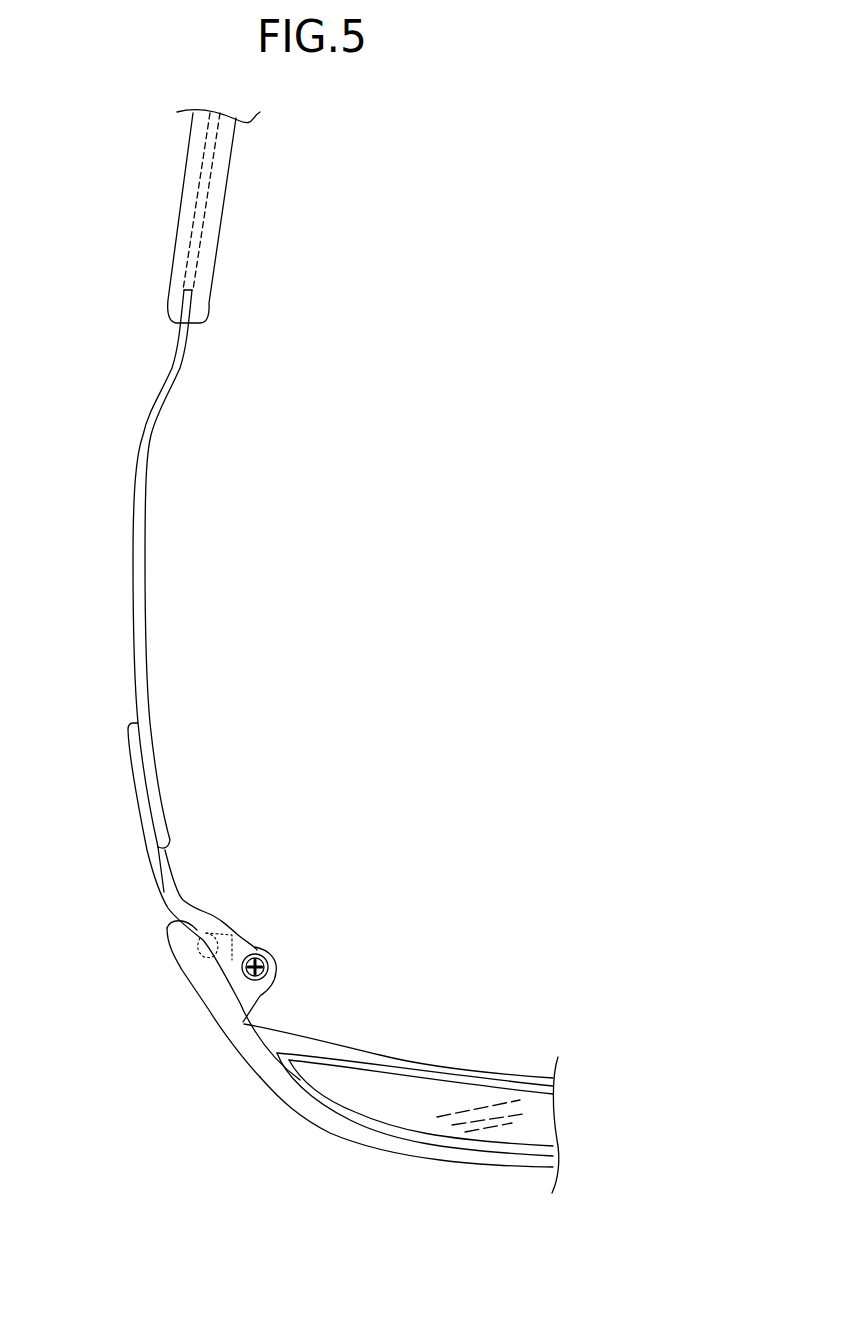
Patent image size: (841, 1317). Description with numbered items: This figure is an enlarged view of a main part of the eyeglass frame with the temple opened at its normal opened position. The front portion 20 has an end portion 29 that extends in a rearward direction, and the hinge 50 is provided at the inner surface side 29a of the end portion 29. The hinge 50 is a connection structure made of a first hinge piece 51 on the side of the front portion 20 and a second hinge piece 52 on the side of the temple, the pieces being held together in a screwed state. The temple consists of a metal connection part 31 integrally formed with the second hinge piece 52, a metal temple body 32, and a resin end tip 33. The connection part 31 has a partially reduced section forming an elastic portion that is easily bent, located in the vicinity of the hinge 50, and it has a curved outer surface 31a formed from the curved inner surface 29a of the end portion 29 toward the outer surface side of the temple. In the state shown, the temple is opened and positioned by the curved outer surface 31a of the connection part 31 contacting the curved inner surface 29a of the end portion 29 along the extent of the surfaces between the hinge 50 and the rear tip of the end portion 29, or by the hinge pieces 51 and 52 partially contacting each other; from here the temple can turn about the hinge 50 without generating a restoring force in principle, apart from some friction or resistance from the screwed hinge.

The front portion 20 is at (460, 1160).
The end portion 29 is at (183, 970).
The inner surface side 29a is at (232, 960).
The connection part 31 is at (157, 882).
The curved outer surface 31a is at (200, 938).
The temple body 32 is at (147, 593).
The end tip 33 is at (222, 207).
The hinge 50 is at (382, 867).
The first hinge piece 51 is at (277, 970).
The second hinge piece 52 is at (270, 953).